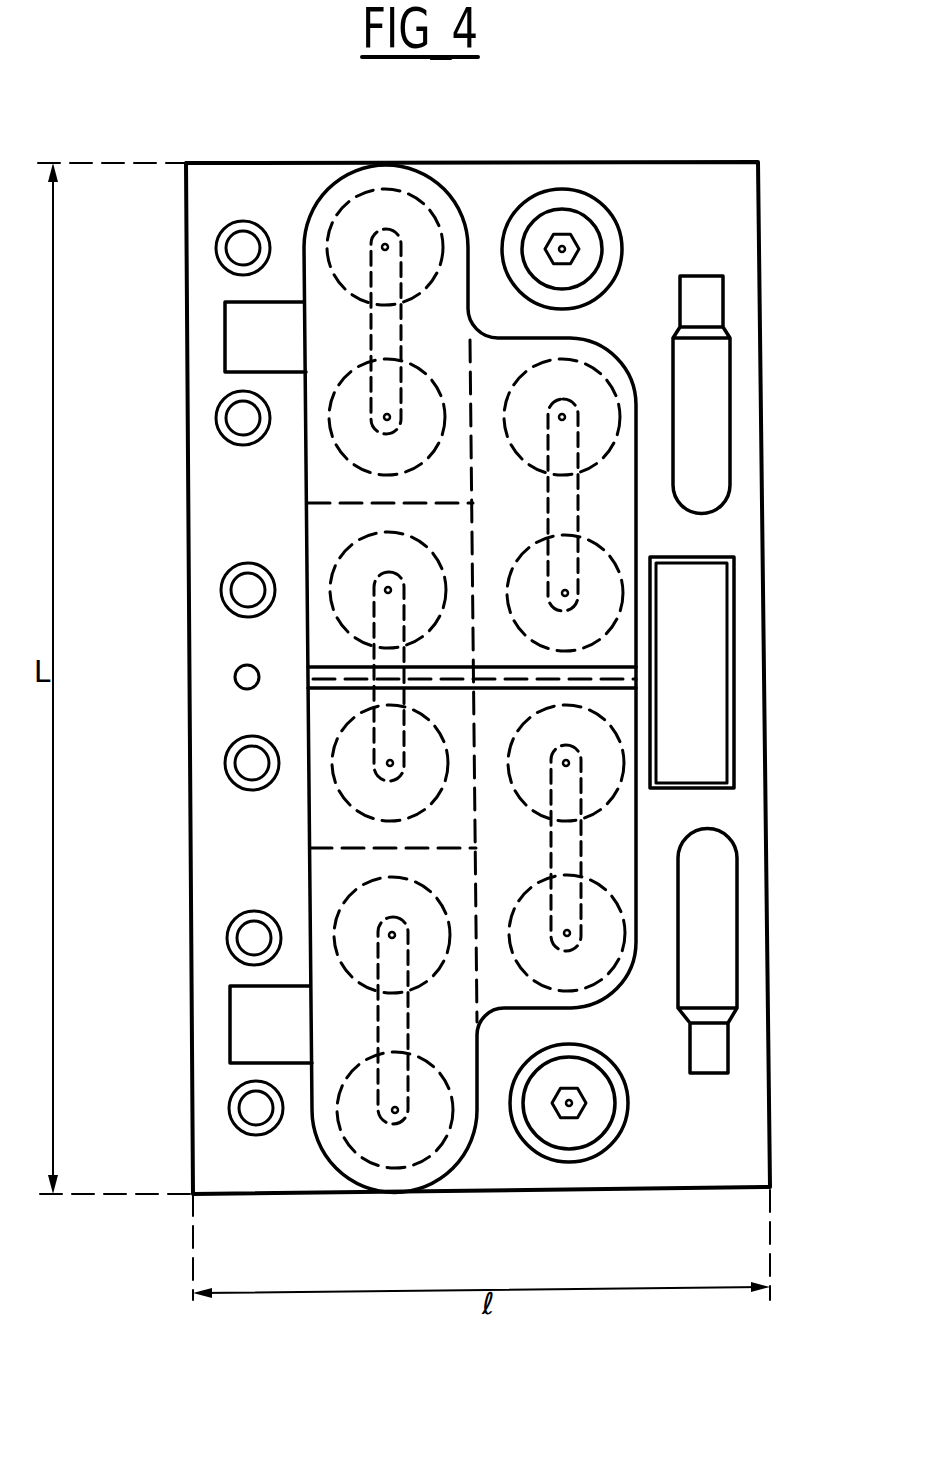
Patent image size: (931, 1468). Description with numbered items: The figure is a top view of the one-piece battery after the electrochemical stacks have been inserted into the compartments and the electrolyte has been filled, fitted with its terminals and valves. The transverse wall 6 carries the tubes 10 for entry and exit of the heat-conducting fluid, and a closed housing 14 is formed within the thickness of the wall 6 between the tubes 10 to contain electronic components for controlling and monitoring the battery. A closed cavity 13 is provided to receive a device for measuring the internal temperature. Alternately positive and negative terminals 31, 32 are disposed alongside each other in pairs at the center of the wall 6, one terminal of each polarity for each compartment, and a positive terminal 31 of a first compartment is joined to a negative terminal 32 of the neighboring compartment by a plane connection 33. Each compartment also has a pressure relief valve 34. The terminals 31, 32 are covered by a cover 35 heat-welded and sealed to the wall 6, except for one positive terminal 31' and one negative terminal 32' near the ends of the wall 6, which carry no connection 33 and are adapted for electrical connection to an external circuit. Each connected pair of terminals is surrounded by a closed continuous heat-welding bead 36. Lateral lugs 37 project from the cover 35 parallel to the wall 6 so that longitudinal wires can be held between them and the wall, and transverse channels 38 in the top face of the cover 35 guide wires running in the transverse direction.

The transverse wall 6 is at (736, 211).
The tubes 10 is at (718, 452).
The closed cavity 13 is at (236, 677).
The closed housing 14 is at (712, 743).
The positive terminal 31 is at (293, 544).
The positive terminal 31' is at (569, 1155).
The negative terminal 32 is at (395, 1158).
The negative terminal 32' is at (562, 205).
The plane connection 33 is at (383, 1023).
The pressure relief valve 34 is at (245, 1107).
The cover 35 is at (317, 477).
The heat-welding bead 36 is at (333, 507).
The lateral lugs 37 is at (238, 341).
The transverse channels 38 is at (323, 679).